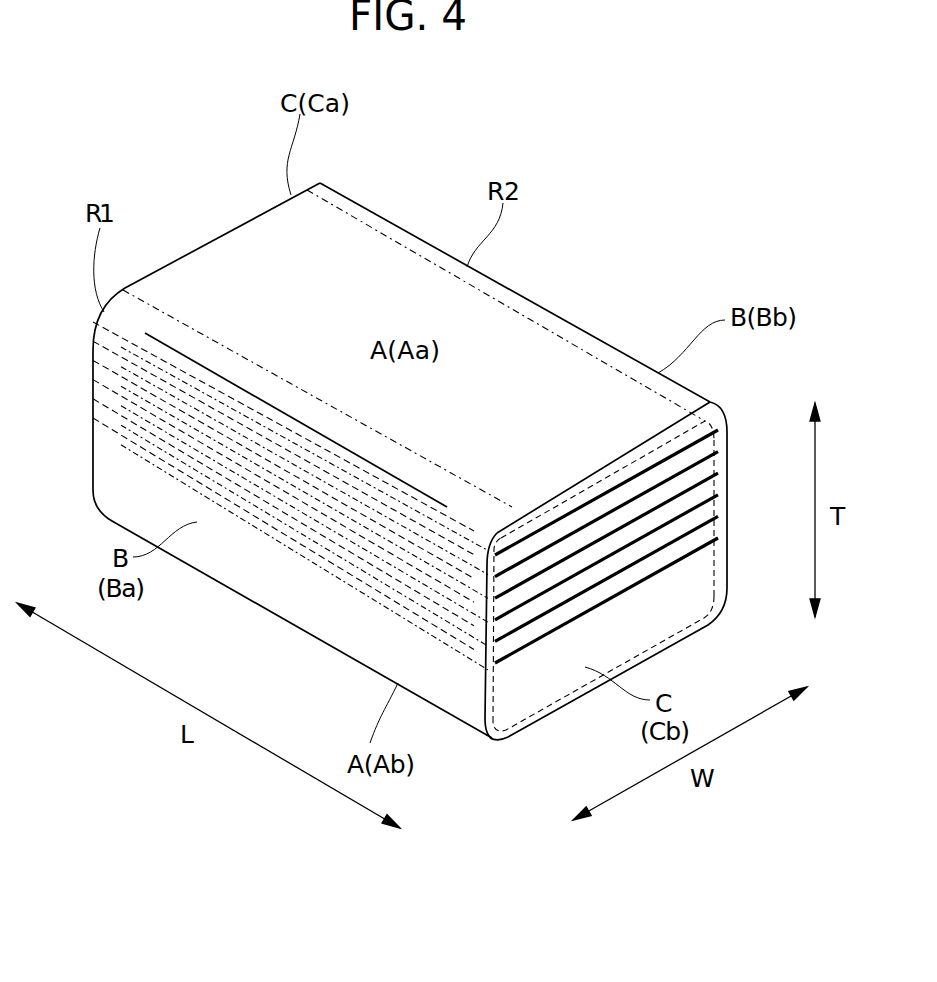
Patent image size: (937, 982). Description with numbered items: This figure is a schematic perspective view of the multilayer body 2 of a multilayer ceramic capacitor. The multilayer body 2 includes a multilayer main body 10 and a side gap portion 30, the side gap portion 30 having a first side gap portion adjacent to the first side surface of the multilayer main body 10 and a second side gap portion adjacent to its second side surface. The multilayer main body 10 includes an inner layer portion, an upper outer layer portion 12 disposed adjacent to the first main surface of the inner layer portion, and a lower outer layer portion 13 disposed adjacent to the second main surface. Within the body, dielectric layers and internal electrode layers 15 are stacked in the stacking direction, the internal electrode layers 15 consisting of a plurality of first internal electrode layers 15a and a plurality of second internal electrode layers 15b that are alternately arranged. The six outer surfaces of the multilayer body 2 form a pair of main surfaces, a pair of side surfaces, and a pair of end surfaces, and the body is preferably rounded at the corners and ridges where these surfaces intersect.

The multilayer body 2 is at (653, 246).
The multilayer main body 10 is at (533, 350).
The upper outer layer portion 12 is at (690, 430).
The lower outer layer portion 13 is at (657, 627).
The internal electrode layer 15 is at (405, 395).
The first internal electrode layer 15a is at (153, 350).
The second internal electrode layer 15b is at (195, 387).
The side gap portion 30 is at (240, 622).